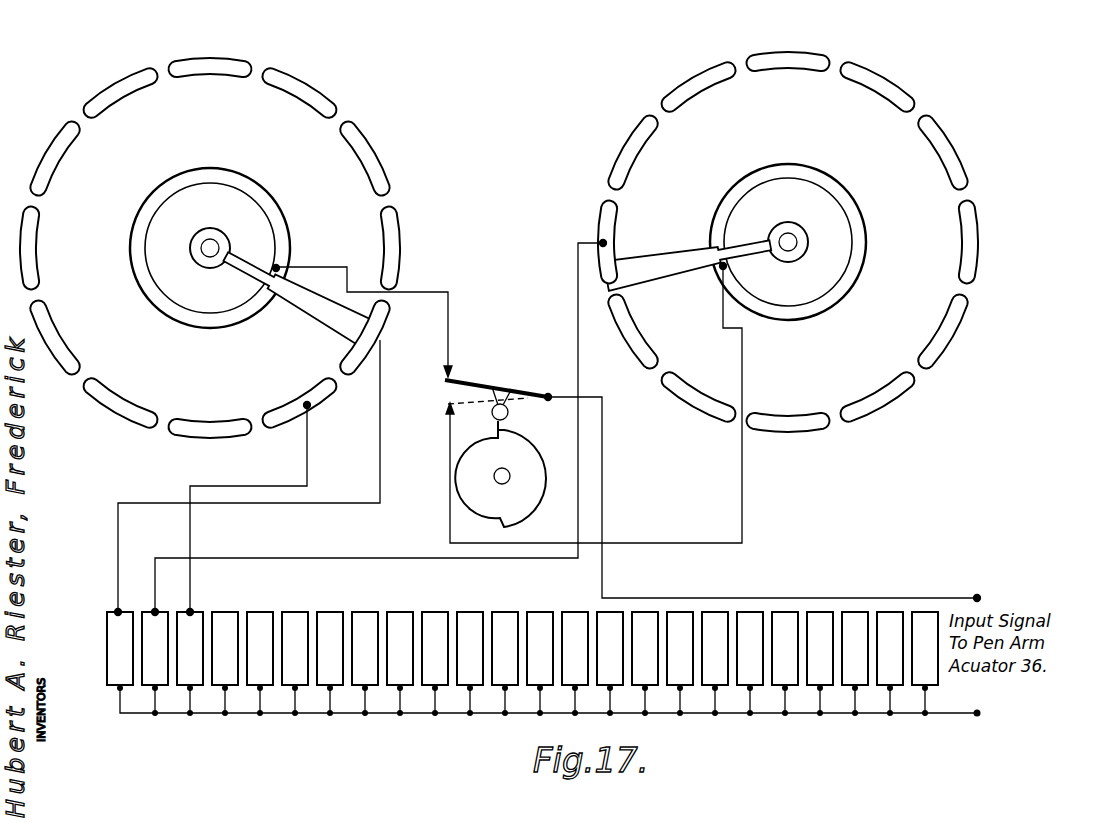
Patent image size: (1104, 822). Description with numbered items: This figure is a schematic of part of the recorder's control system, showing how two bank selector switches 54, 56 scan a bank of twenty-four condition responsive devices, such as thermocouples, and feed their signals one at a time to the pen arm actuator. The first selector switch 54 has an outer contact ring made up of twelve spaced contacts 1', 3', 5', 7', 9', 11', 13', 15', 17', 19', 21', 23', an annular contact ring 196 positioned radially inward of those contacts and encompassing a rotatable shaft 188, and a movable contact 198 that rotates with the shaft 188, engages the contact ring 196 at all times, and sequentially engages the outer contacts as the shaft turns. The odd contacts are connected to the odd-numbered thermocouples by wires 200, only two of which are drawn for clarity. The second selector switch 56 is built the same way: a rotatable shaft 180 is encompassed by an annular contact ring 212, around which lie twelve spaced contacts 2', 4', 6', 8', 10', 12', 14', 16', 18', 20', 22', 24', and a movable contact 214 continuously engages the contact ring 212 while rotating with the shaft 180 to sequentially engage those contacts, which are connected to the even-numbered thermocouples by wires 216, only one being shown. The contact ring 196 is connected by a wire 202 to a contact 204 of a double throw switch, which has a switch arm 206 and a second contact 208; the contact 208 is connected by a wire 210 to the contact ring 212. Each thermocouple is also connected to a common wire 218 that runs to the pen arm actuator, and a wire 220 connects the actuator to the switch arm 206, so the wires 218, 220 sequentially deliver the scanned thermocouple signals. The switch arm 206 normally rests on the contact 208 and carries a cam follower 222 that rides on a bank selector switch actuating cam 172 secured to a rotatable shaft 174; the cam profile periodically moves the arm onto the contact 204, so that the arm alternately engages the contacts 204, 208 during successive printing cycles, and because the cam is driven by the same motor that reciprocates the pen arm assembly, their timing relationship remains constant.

The bank selector switch 54 is at (306, 160).
The bank selector switch 56 is at (922, 223).
The rotatable shaft 188 is at (211, 241).
The annular contact ring 196 is at (279, 221).
The movable contact 198 is at (302, 300).
The rotatable shaft 180 is at (788, 251).
The annular contact ring 212 is at (843, 292).
The movable contact 214 is at (655, 262).
The wire 202 is at (366, 320).
The contact 204 is at (446, 376).
The switch arm 206 is at (478, 383).
The second contact 208 is at (447, 418).
The wires 200 is at (381, 428).
The wire 210 is at (742, 500).
The wires 216 is at (385, 550).
The wire 218 is at (735, 714).
The wire 220 is at (840, 583).
The cam follower 222 is at (510, 411).
The bank selector switch actuating cam 172 is at (527, 512).
The rotatable shaft 174 is at (498, 483).
The contact 1' is at (371, 338).
The contact 2' is at (593, 242).
The contact 3' is at (300, 404).
The contact 4' is at (629, 151).
The contact 5' is at (210, 442).
The contact 6' is at (697, 86).
The contact 7' is at (119, 404).
The contact 8' is at (788, 50).
The contact 9' is at (51, 338).
The contact 10' is at (878, 86).
The contact 11' is at (19, 248).
The contact 12' is at (952, 151).
The contact 13' is at (45, 157).
The contact 14' is at (985, 242).
The contact 15' is at (118, 92).
The contact 16' is at (952, 332).
The contact 17' is at (210, 56).
The contact 18' is at (878, 400).
The contact 19' is at (300, 91).
The contact 20' is at (788, 437).
The contact 21' is at (375, 157).
The contact 22' is at (694, 398).
The contact 23' is at (409, 248).
The contact 24' is at (625, 332).